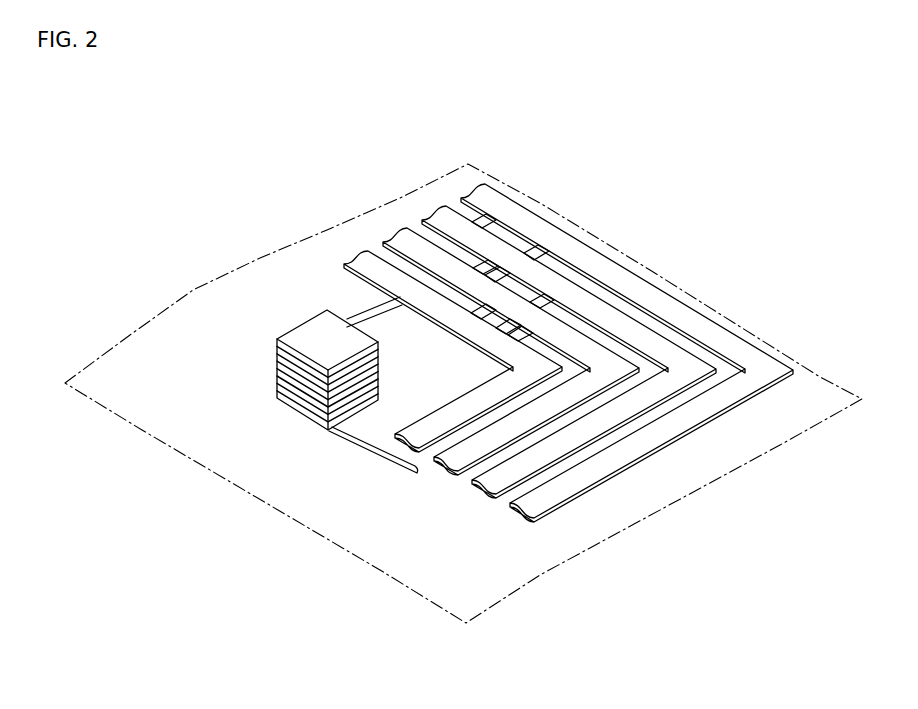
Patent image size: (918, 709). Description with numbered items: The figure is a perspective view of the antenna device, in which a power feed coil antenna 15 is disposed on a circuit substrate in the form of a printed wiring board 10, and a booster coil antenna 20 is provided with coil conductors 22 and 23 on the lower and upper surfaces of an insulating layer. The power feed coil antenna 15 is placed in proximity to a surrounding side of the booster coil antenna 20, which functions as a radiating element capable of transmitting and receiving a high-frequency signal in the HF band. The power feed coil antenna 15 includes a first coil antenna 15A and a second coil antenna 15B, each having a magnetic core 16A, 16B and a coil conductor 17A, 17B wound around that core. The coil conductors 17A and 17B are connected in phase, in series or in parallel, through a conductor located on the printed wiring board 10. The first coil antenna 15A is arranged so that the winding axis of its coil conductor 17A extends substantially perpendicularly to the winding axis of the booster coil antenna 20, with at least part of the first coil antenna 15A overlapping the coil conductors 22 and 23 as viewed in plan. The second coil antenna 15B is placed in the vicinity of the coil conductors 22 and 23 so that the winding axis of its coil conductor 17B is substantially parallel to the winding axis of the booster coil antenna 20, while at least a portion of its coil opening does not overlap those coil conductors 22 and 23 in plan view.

The printed wiring board 10 is at (178, 302).
The power feed coil antenna 15 is at (278, 361).
The first coil antenna 15A is at (502, 232).
The second coil antenna 15B is at (301, 325).
The magnetic core 16A is at (497, 231).
The magnetic core 16B is at (307, 318).
The coil conductor 17A is at (440, 222).
The coil conductor 17B is at (277, 384).
The booster coil antenna 20 is at (574, 324).
The coil conductor 22 is at (622, 275).
The coil conductor 23 is at (453, 351).